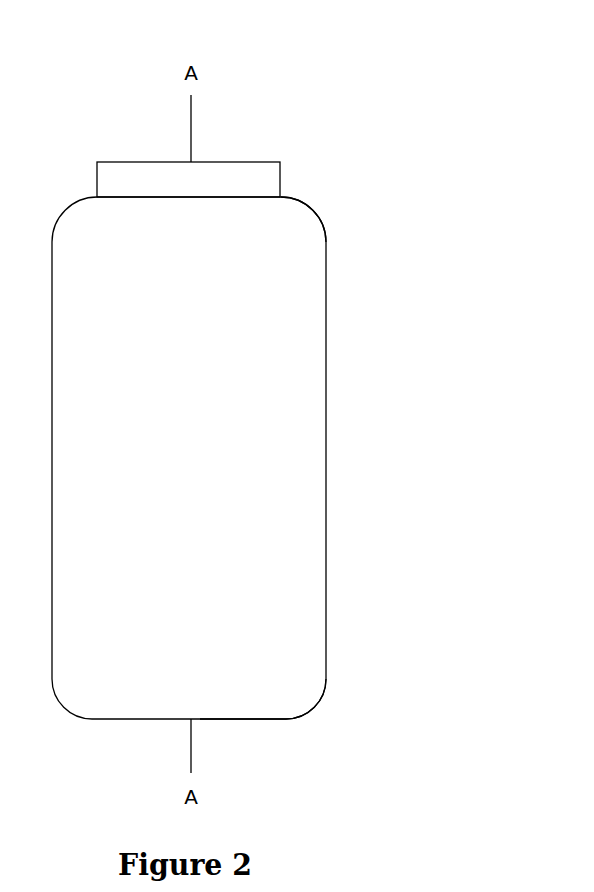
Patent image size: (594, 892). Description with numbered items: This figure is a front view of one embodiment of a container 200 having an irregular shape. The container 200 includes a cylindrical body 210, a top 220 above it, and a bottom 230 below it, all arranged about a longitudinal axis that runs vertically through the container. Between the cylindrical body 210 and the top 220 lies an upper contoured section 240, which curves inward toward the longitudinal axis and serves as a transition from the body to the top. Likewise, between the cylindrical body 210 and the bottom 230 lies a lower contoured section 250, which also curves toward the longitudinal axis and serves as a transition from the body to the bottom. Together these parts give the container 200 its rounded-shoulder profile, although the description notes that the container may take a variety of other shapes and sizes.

The container 200 is at (420, 102).
The cylindrical body 210 is at (326, 443).
The top 220 is at (223, 163).
The bottom 230 is at (247, 719).
The upper contoured section 240 is at (334, 200).
The lower contoured section 250 is at (335, 661).